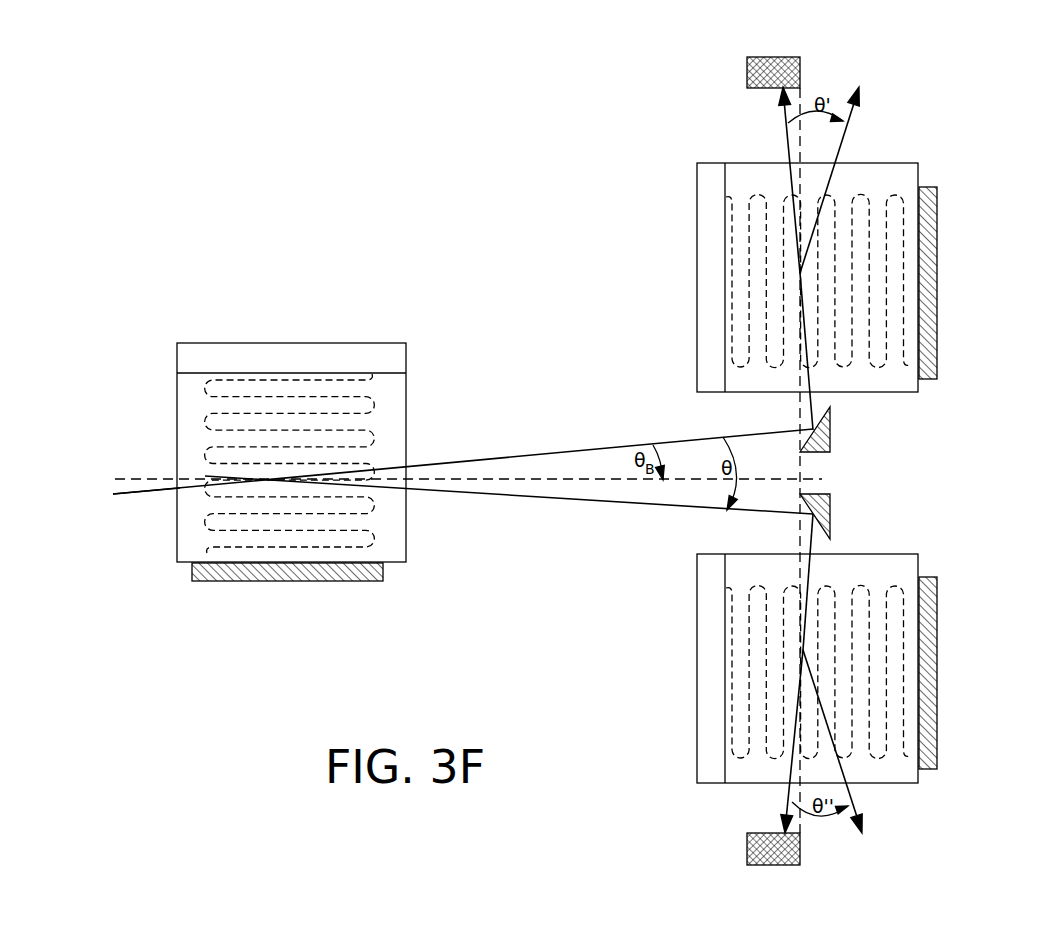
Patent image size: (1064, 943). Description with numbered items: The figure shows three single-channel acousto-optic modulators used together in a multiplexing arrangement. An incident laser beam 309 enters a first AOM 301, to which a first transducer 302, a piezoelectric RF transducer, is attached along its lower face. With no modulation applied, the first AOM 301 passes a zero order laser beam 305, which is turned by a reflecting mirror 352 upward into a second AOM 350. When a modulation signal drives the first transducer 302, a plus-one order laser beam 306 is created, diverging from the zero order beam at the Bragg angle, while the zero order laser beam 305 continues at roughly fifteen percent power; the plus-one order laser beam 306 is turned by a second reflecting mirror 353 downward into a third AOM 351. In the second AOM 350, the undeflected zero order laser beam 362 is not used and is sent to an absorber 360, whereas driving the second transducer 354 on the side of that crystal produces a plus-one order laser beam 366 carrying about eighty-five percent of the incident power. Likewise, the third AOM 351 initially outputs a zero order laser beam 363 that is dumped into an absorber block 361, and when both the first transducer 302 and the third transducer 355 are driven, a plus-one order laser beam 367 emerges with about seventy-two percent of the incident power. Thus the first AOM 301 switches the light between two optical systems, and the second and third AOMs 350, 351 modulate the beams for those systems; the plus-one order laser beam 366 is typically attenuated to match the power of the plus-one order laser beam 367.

The first AOM 301 is at (405, 542).
The first transducer 302 is at (360, 583).
The zero order laser beam 305 is at (550, 452).
The +1 order laser beam 306 is at (537, 498).
The incident laser beam 309 is at (150, 492).
The second AOM 350 is at (897, 378).
The third AOM 351 is at (890, 768).
The reflecting mirror 352 is at (833, 437).
The reflecting mirror 353 is at (833, 522).
The second transducer 354 is at (940, 335).
The third transducer 355 is at (942, 732).
The absorber 360 is at (750, 88).
The absorber block 361 is at (745, 857).
The zero order laser beam 362 is at (787, 149).
The zero order laser beam 363 is at (786, 797).
The +1 order laser beam 366 is at (846, 133).
The +1 order laser beam 367 is at (851, 792).